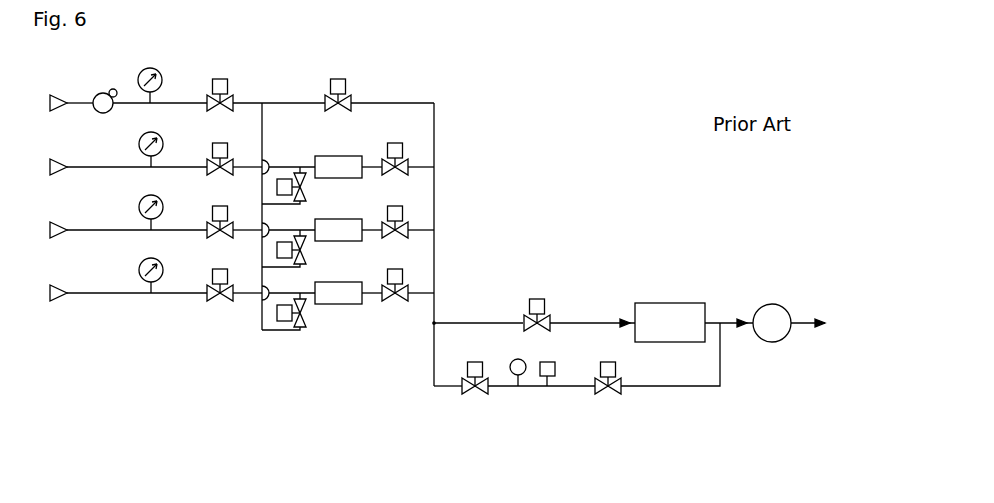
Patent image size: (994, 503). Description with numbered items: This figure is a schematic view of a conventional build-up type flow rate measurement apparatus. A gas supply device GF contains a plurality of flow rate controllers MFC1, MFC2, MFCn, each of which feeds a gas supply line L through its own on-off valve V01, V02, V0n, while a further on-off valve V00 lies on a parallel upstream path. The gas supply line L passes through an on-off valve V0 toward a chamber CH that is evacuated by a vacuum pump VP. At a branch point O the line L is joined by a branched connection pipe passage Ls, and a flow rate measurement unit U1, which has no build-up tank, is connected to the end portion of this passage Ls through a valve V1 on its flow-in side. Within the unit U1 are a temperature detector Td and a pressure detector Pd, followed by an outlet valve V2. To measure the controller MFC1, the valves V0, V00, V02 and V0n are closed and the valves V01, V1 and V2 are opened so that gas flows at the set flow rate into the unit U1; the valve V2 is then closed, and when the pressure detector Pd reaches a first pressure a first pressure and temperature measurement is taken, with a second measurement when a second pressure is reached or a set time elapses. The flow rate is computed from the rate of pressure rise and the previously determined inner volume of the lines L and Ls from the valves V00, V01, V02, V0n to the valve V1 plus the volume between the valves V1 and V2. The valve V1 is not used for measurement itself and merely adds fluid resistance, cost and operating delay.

The gas supply device GF is at (242, 227).
The flow rate controller MFC1 is at (338, 167).
The flow rate controller MFC2 is at (338, 230).
The flow rate controller MFCn is at (338, 293).
The on-off valve V00 is at (339, 78).
The on-off valve V01 is at (395, 143).
The on-off valve V02 is at (395, 207).
The on-off valve V0n is at (395, 270).
The gas supply line L is at (434, 308).
The branch point O is at (434, 324).
The on-off valve V0 is at (538, 299).
The processing chamber CH is at (667, 303).
The vacuum pump VP is at (772, 304).
The branched connection pipe passage Ls is at (434, 362).
The on-off valve V1 is at (475, 394).
The on-off valve V2 is at (608, 394).
The temperature detector Td is at (513, 362).
The pressure detector Pd is at (555, 363).
The flow rate measurement unit U1 is at (540, 404).